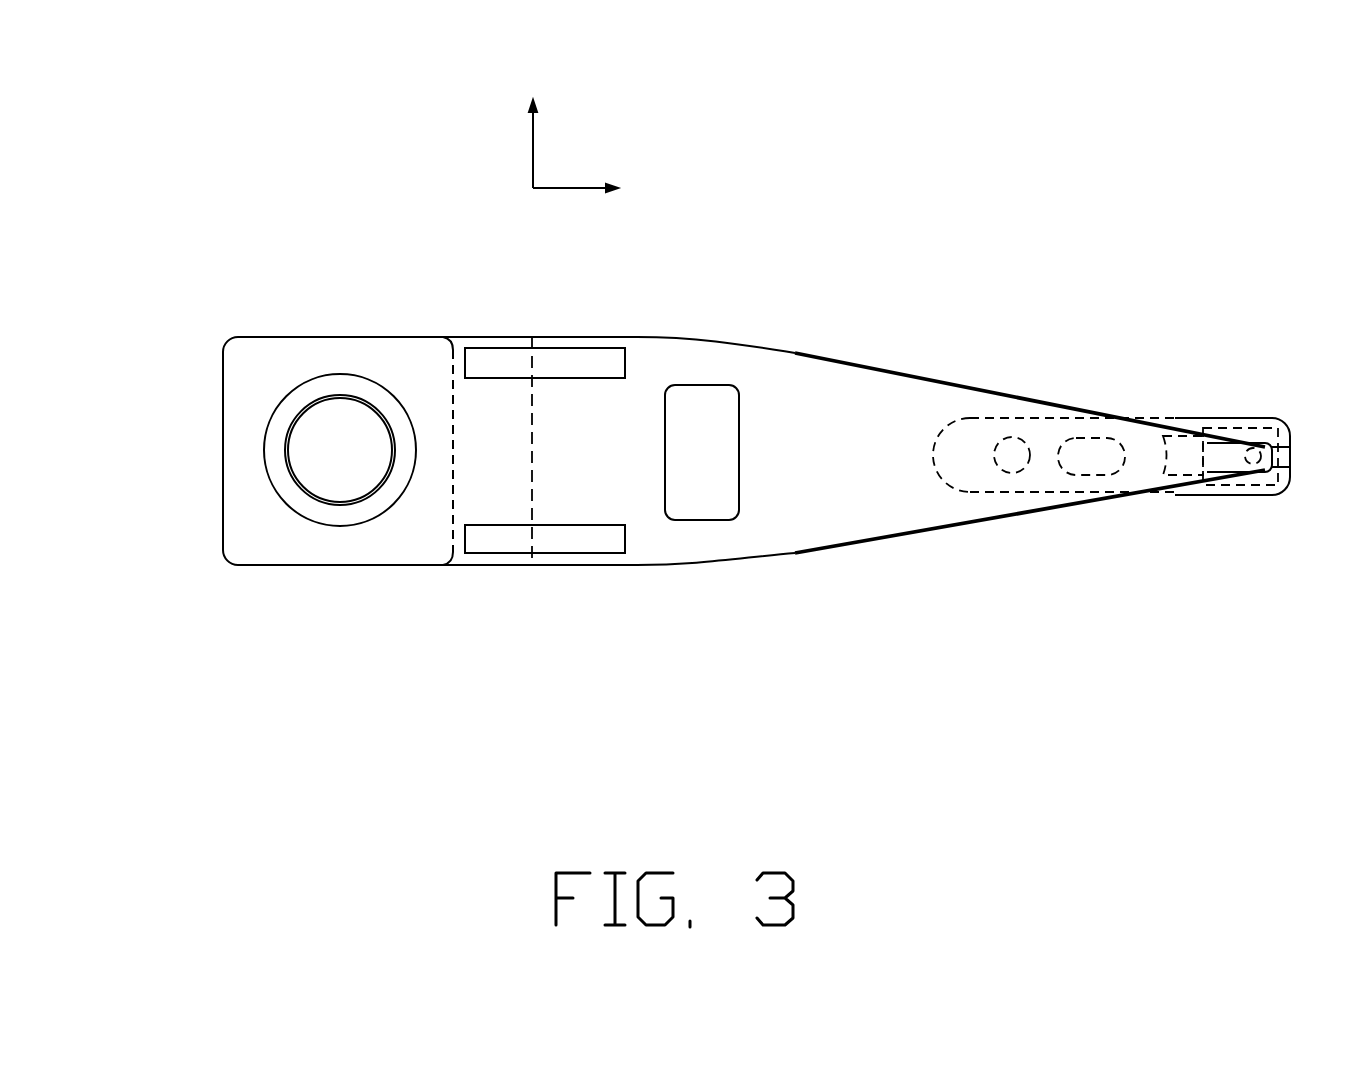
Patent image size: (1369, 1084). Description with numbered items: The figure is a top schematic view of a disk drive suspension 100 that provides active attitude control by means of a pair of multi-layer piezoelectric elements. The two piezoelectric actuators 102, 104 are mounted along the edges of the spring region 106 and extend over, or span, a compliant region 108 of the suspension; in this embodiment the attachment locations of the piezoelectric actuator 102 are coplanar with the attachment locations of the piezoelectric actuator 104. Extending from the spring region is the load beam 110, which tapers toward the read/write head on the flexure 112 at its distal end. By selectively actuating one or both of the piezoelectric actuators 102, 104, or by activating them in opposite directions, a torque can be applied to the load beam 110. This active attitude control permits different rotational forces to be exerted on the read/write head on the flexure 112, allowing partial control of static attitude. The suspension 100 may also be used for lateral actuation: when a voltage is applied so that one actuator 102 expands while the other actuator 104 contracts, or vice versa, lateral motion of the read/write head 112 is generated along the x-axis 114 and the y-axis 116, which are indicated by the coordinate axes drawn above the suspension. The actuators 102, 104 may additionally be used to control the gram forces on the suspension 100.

The disk drive suspension 100 is at (178, 553).
The piezoelectric actuator 102 is at (496, 543).
The piezoelectric actuator 104 is at (483, 358).
The spring region 106 is at (515, 346).
The compliant region 108 is at (532, 448).
The load beam 110 is at (848, 390).
The flexure 112 is at (1252, 430).
The x-axis 114 is at (577, 188).
The y-axis 116 is at (533, 138).